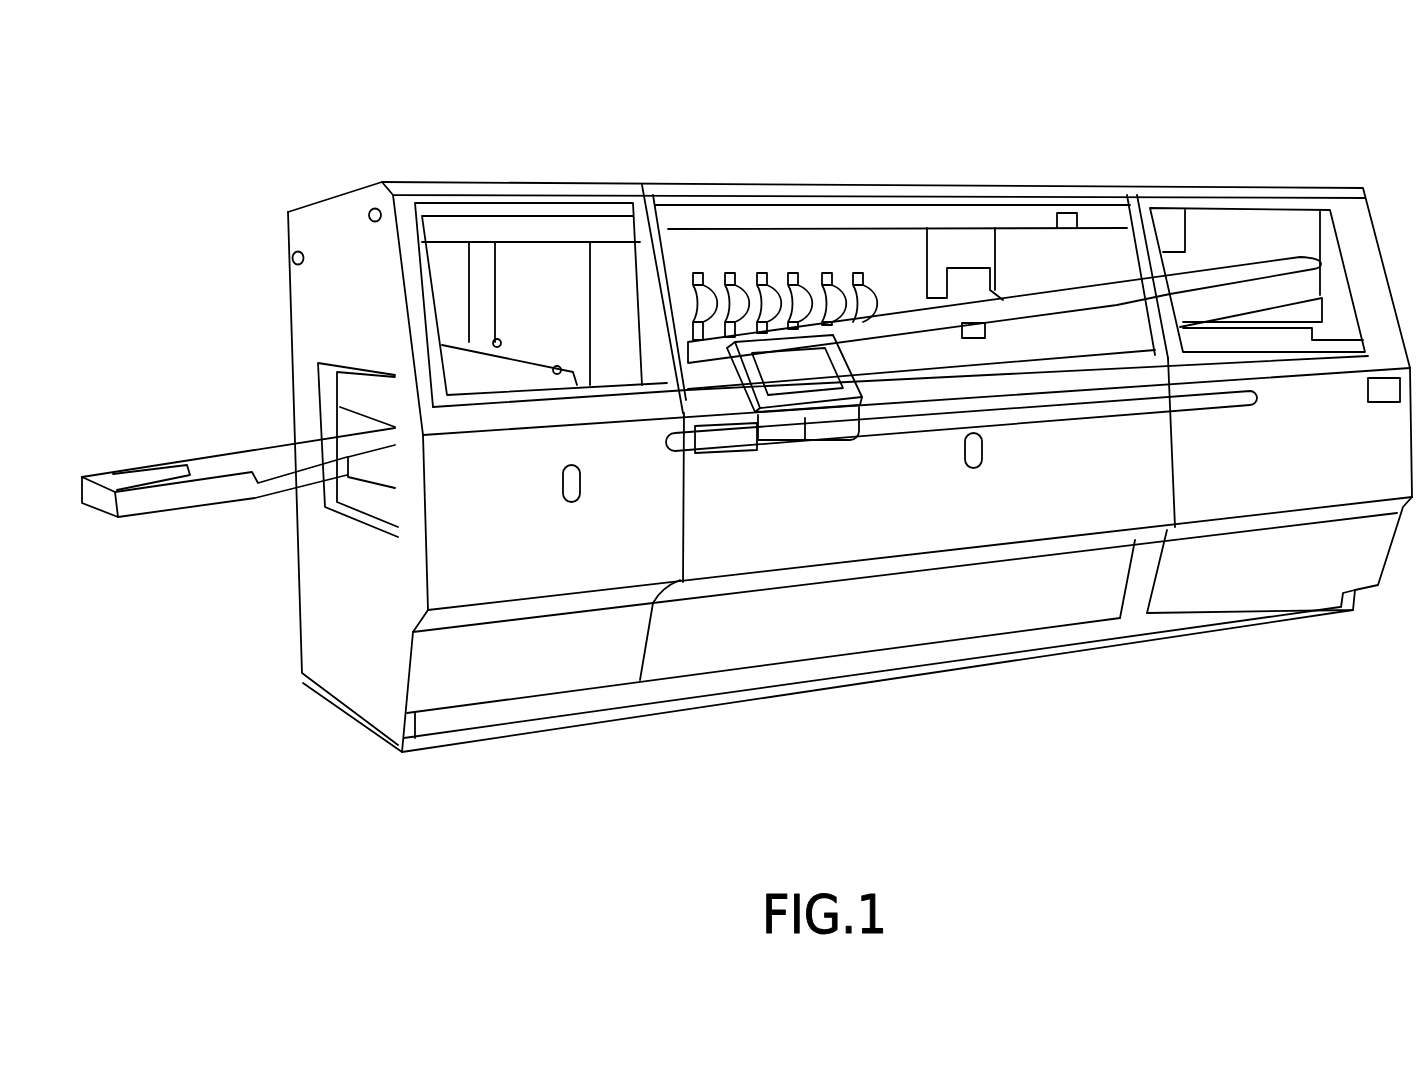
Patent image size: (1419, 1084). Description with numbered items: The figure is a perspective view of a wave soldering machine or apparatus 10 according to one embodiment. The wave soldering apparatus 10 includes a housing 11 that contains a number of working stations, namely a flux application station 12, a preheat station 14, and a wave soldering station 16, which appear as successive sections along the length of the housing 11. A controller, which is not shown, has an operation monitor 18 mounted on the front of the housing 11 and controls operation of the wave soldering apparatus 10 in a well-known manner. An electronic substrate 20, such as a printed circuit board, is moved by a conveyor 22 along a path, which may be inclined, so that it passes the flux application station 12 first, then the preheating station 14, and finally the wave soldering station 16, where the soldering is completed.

The wave soldering apparatus 10 is at (954, 783).
The housing 11 is at (480, 684).
The flux application station 12 is at (511, 168).
The preheat station 14 is at (821, 168).
The wave soldering station 16 is at (1271, 170).
The operation monitor 18 is at (812, 380).
The electronic substrate 20 is at (236, 493).
The conveyor 22 is at (100, 503).